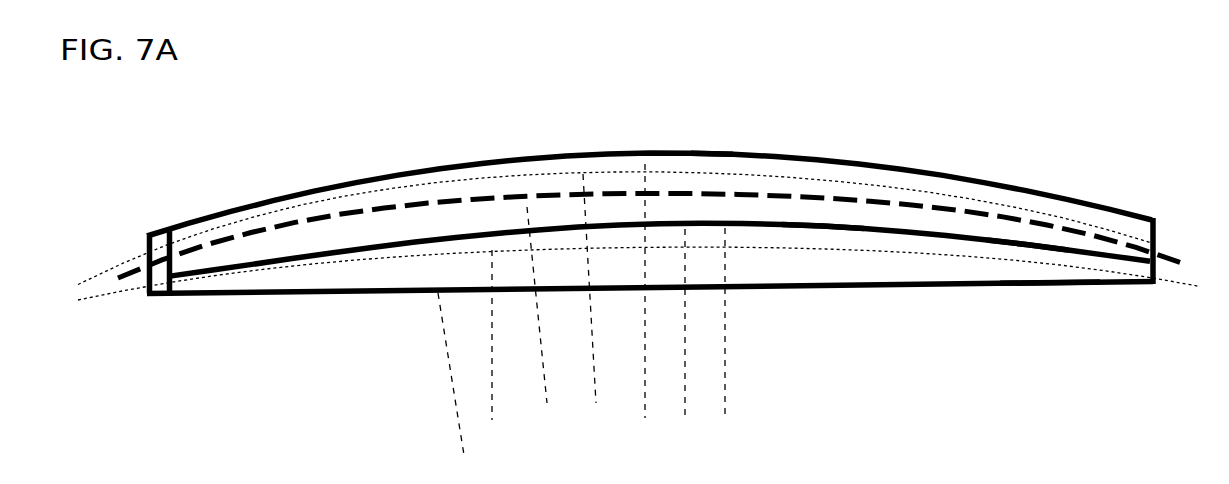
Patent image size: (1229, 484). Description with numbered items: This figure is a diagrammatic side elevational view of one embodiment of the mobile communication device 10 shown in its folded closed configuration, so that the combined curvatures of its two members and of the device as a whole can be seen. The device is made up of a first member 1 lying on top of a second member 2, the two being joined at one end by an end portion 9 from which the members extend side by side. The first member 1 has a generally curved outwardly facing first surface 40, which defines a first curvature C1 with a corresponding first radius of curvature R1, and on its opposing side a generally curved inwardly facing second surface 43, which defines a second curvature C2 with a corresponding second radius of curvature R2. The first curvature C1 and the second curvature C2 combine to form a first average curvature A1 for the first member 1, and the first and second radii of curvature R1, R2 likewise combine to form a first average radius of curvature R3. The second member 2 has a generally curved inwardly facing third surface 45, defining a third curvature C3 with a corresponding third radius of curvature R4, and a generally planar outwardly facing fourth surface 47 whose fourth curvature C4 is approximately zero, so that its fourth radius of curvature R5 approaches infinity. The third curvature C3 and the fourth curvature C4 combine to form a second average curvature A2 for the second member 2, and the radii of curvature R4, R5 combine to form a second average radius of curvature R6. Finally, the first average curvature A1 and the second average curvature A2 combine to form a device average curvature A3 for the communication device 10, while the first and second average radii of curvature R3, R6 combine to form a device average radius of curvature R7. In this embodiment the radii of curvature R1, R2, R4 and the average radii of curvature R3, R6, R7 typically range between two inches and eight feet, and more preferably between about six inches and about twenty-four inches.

The communication device 10 is at (338, 118).
The first member 1 is at (437, 171).
The second member 2 is at (278, 248).
The end bracket 9 is at (152, 237).
The first surface 40 is at (879, 162).
The first curvature C1 is at (705, 154).
The device average curvature A3 is at (770, 193).
The first average curvature A1 is at (950, 196).
The second surface 43 is at (1057, 186).
The second curvature C2 is at (1015, 238).
The second average curvature A2 is at (931, 254).
The third surface 45 is at (868, 301).
The third curvature C3 is at (827, 228).
The fourth surface 47 is at (1062, 325).
The fourth curvature C4 is at (1026, 280).
The first radius of curvature R1 is at (645, 358).
The second radius of curvature R2 is at (682, 357).
The first average radius of curvature R3 is at (591, 347).
The third radius of curvature R4 is at (722, 356).
The fourth radius of curvature R5 is at (443, 336).
The second average radius of curvature R6 is at (492, 364).
The device average radius of curvature R7 is at (542, 343).